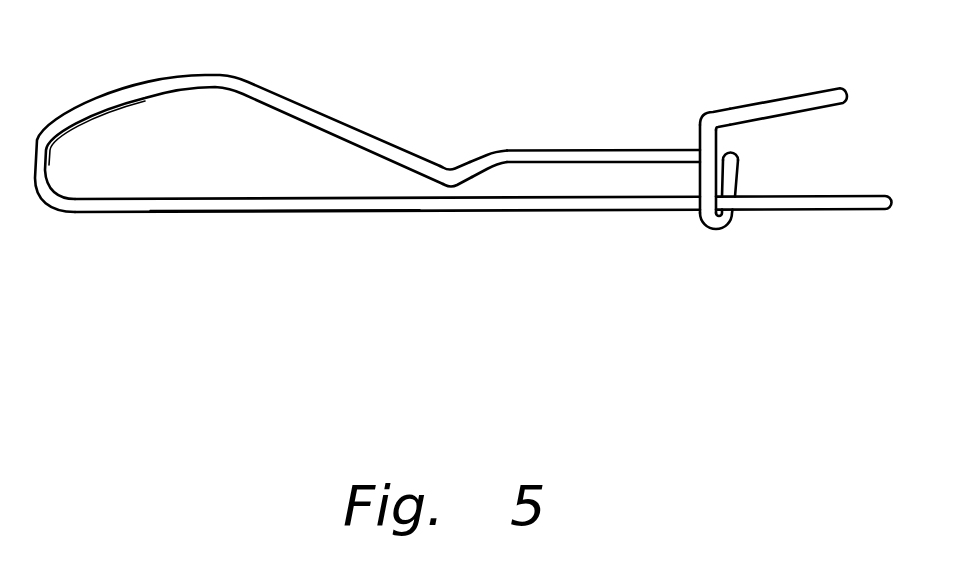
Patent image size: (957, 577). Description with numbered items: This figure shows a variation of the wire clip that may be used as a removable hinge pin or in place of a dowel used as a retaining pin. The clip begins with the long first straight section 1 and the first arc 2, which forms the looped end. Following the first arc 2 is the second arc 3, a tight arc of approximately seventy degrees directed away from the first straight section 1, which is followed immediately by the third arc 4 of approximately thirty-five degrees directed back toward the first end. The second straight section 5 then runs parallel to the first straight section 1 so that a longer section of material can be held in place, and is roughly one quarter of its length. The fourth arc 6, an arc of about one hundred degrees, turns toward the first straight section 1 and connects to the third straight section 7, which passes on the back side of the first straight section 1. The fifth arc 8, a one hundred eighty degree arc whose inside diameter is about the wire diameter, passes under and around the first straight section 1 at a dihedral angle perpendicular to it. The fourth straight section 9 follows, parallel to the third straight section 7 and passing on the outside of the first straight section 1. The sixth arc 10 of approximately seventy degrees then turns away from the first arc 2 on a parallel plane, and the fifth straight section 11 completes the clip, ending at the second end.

The first straight section 1 is at (550, 210).
The first arc 2 is at (130, 87).
The second arc 3 is at (448, 167).
The third arc 4 is at (492, 151).
The second straight section 5 is at (585, 150).
The fourth arc 6 is at (734, 153).
The third straight section 7 is at (739, 175).
The fifth arc 8 is at (727, 223).
The fourth straight section 9 is at (700, 127).
The sixth arc 10 is at (715, 117).
The fifth straight section 11 is at (813, 91).